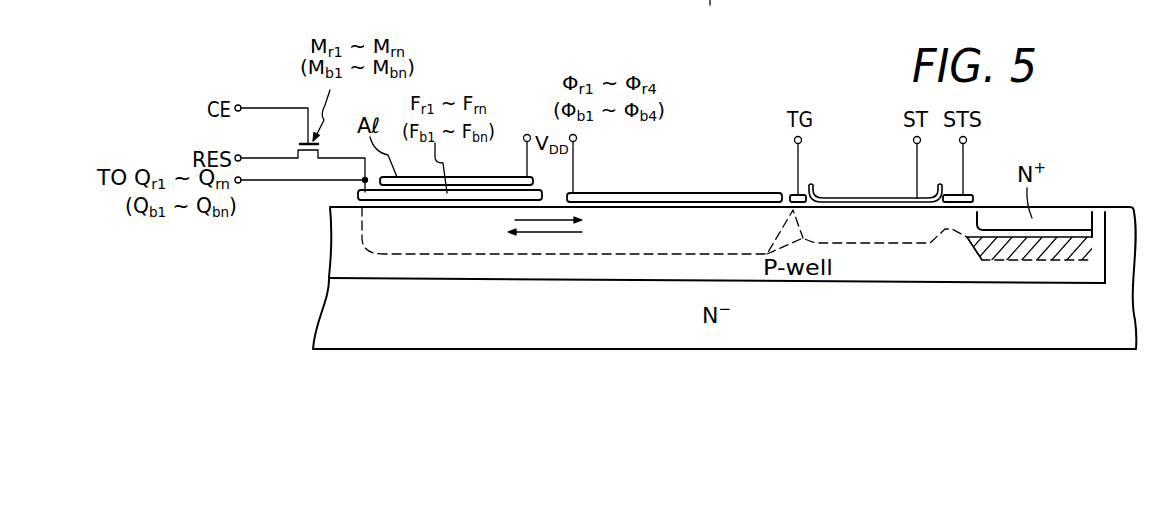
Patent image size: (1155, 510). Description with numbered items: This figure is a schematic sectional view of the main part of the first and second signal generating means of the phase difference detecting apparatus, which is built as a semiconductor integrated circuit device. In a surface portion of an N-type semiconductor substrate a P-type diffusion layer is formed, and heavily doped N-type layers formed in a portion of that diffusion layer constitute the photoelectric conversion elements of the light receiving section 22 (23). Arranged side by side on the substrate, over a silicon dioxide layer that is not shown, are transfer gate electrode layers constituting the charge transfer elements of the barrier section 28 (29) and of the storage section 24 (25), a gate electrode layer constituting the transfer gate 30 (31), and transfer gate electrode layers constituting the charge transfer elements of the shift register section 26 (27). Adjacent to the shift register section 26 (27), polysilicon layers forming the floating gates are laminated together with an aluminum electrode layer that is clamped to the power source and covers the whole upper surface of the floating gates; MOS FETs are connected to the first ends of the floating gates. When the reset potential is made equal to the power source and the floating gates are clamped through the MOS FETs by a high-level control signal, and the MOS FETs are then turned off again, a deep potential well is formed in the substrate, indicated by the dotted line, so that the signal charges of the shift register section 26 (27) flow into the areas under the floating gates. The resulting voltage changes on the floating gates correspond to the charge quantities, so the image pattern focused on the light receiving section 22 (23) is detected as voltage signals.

The light receiving section 22 is at (1042, 180).
The light receiving section 23 is at (1062, 203).
The storage section 24 is at (875, 167).
The storage section 25 is at (862, 185).
The shift register section 26 is at (674, 166).
The shift register section 27 is at (662, 186).
The barrier section 28 is at (991, 167).
The barrier section 29 is at (967, 195).
The transfer gate 30 is at (759, 169).
The transfer gate 31 is at (793, 193).